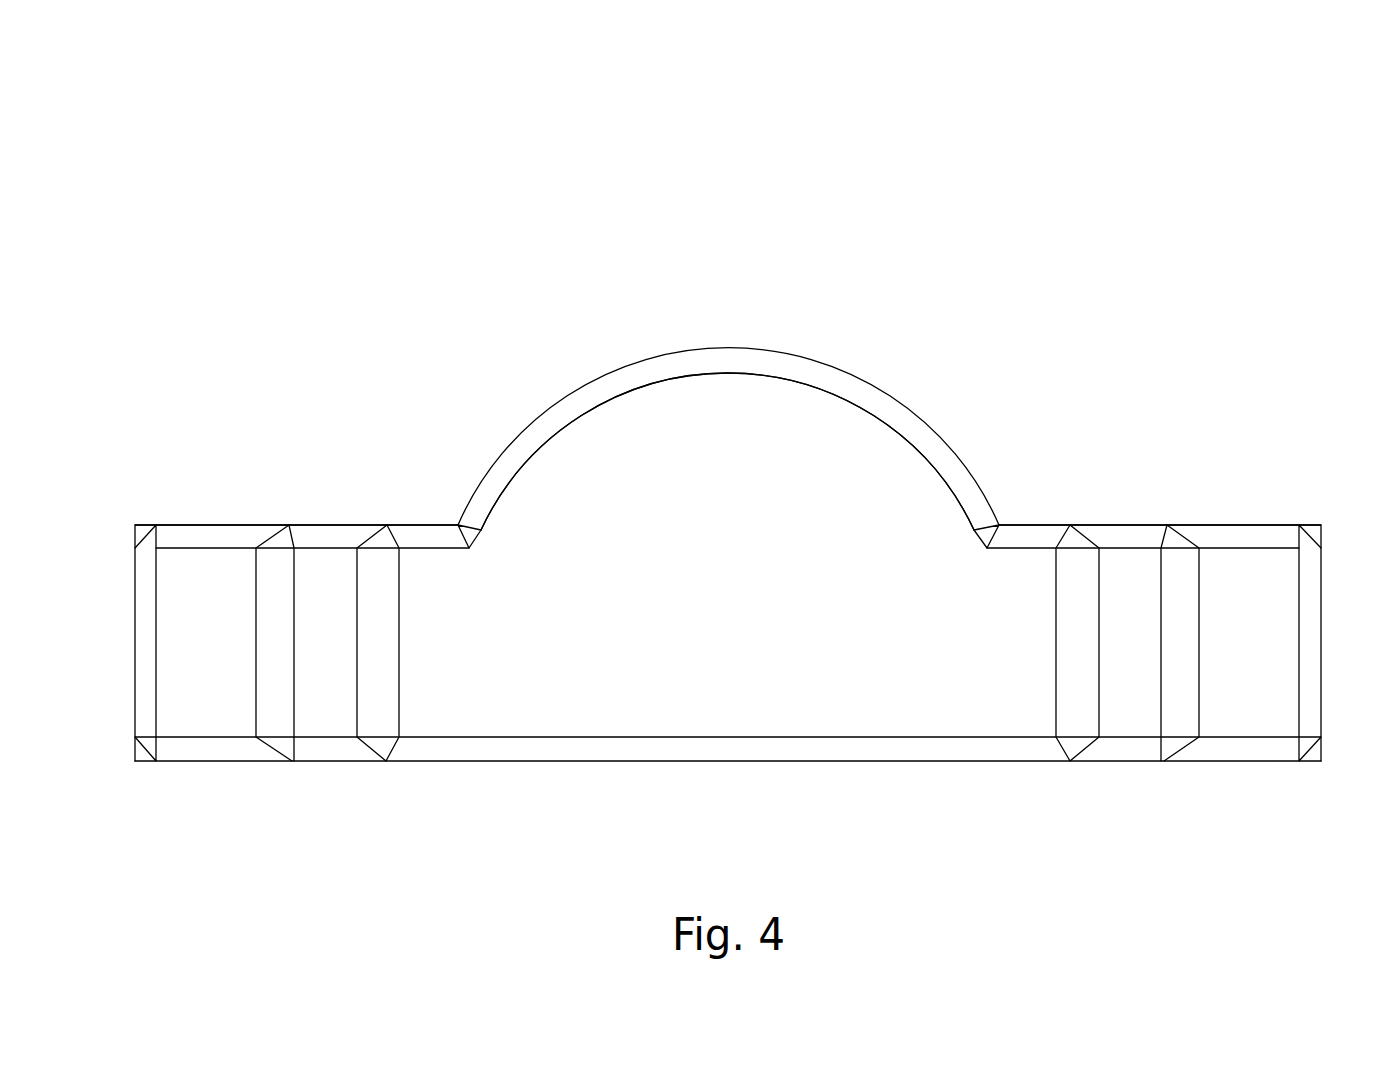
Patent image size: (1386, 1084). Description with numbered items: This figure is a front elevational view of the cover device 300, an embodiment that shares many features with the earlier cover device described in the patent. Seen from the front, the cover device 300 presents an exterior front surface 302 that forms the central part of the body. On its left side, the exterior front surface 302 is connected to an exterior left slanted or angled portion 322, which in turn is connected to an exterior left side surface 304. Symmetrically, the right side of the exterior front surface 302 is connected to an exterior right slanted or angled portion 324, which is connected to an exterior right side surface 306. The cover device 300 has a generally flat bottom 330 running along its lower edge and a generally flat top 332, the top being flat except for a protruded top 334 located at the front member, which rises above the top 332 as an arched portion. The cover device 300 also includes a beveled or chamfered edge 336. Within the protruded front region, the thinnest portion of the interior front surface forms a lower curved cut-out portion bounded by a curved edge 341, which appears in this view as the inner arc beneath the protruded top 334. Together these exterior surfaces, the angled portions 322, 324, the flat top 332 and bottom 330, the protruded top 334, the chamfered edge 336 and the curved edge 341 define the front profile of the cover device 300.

The cover device 300 is at (735, 463).
The exterior front surface 302 is at (650, 650).
The exterior left side surface 304 is at (1323, 635).
The exterior right side surface 306 is at (133, 653).
The exterior left angled portion 322 is at (1213, 653).
The exterior right angled portion 324 is at (230, 643).
The generally flat bottom 330 is at (855, 762).
The generally flat top 332 is at (216, 525).
The protruded top 334 is at (758, 351).
The chamfered edge 336 is at (813, 375).
The curved edge 341 is at (720, 373).